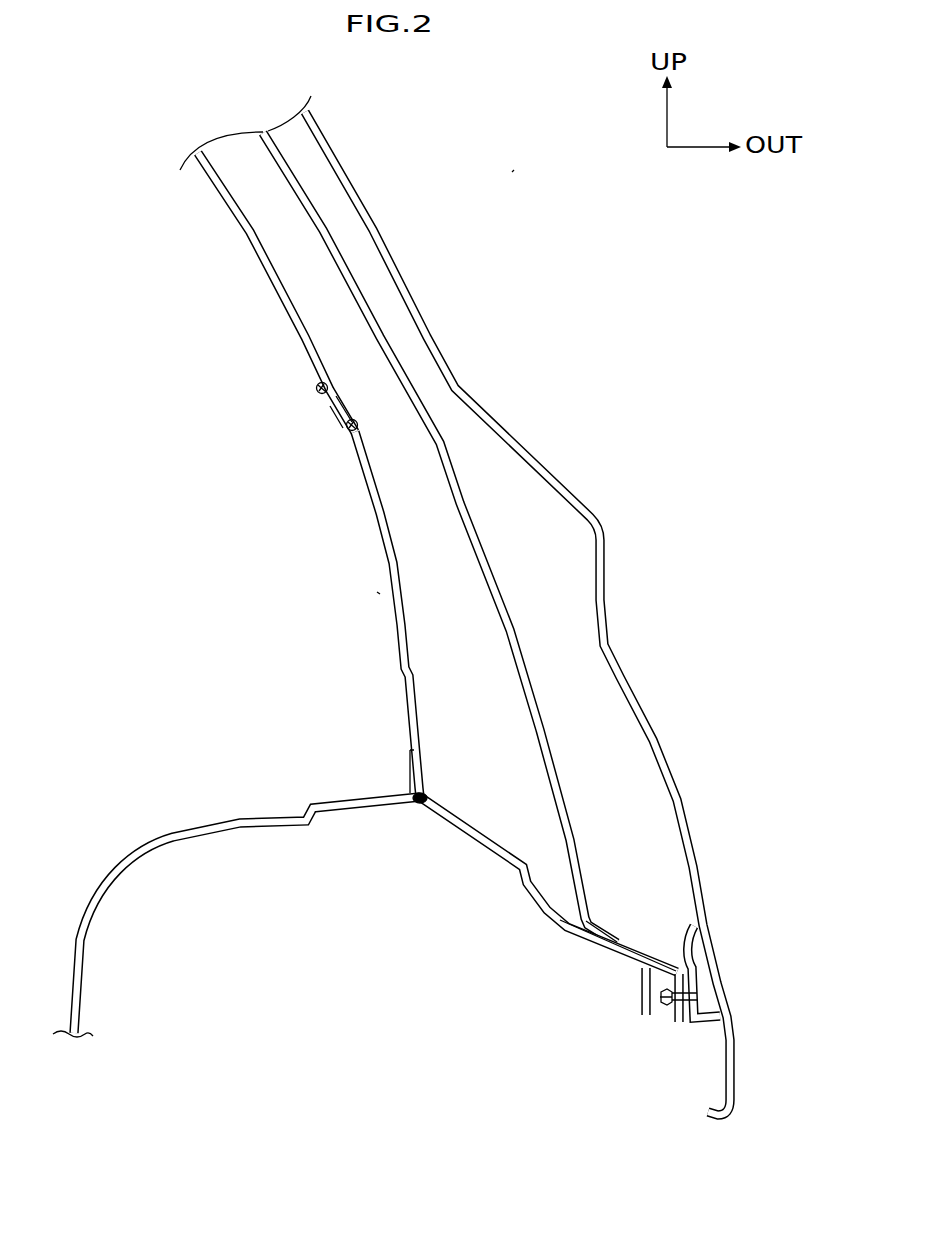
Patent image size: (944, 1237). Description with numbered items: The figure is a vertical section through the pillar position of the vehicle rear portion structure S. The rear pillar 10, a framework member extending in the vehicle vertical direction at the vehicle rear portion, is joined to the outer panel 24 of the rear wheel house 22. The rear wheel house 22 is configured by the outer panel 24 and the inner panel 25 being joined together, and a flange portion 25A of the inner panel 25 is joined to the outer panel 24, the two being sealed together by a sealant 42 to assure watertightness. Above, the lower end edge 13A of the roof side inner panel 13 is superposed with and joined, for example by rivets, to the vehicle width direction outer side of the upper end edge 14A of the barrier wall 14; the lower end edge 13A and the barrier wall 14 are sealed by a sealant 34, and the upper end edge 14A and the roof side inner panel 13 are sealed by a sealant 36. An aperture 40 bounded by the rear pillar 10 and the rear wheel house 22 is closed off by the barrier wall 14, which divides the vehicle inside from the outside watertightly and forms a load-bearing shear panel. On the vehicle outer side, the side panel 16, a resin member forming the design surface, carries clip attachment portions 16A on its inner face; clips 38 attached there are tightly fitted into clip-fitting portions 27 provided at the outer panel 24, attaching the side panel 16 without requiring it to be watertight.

The rear pillar 10 is at (380, 328).
The roof side inner panel 13 is at (248, 260).
The lower end edge 13A is at (349, 403).
The barrier wall 14 is at (408, 573).
The upper end edge 14A is at (336, 418).
The side panel 16 is at (546, 466).
The clip attachment portion 16A is at (695, 925).
The rear wheel house 22 is at (365, 884).
The outer panel 24 is at (480, 830).
The inner panel 25 is at (233, 813).
The flange portion 25A is at (407, 763).
The clip-fitting portion 27 is at (668, 960).
The sealant 34 is at (360, 428).
The sealant 36 is at (316, 389).
The clip 38 is at (664, 1007).
The aperture 40 is at (377, 592).
The sealant 42 is at (417, 804).
The vehicle rear portion structure S is at (513, 171).